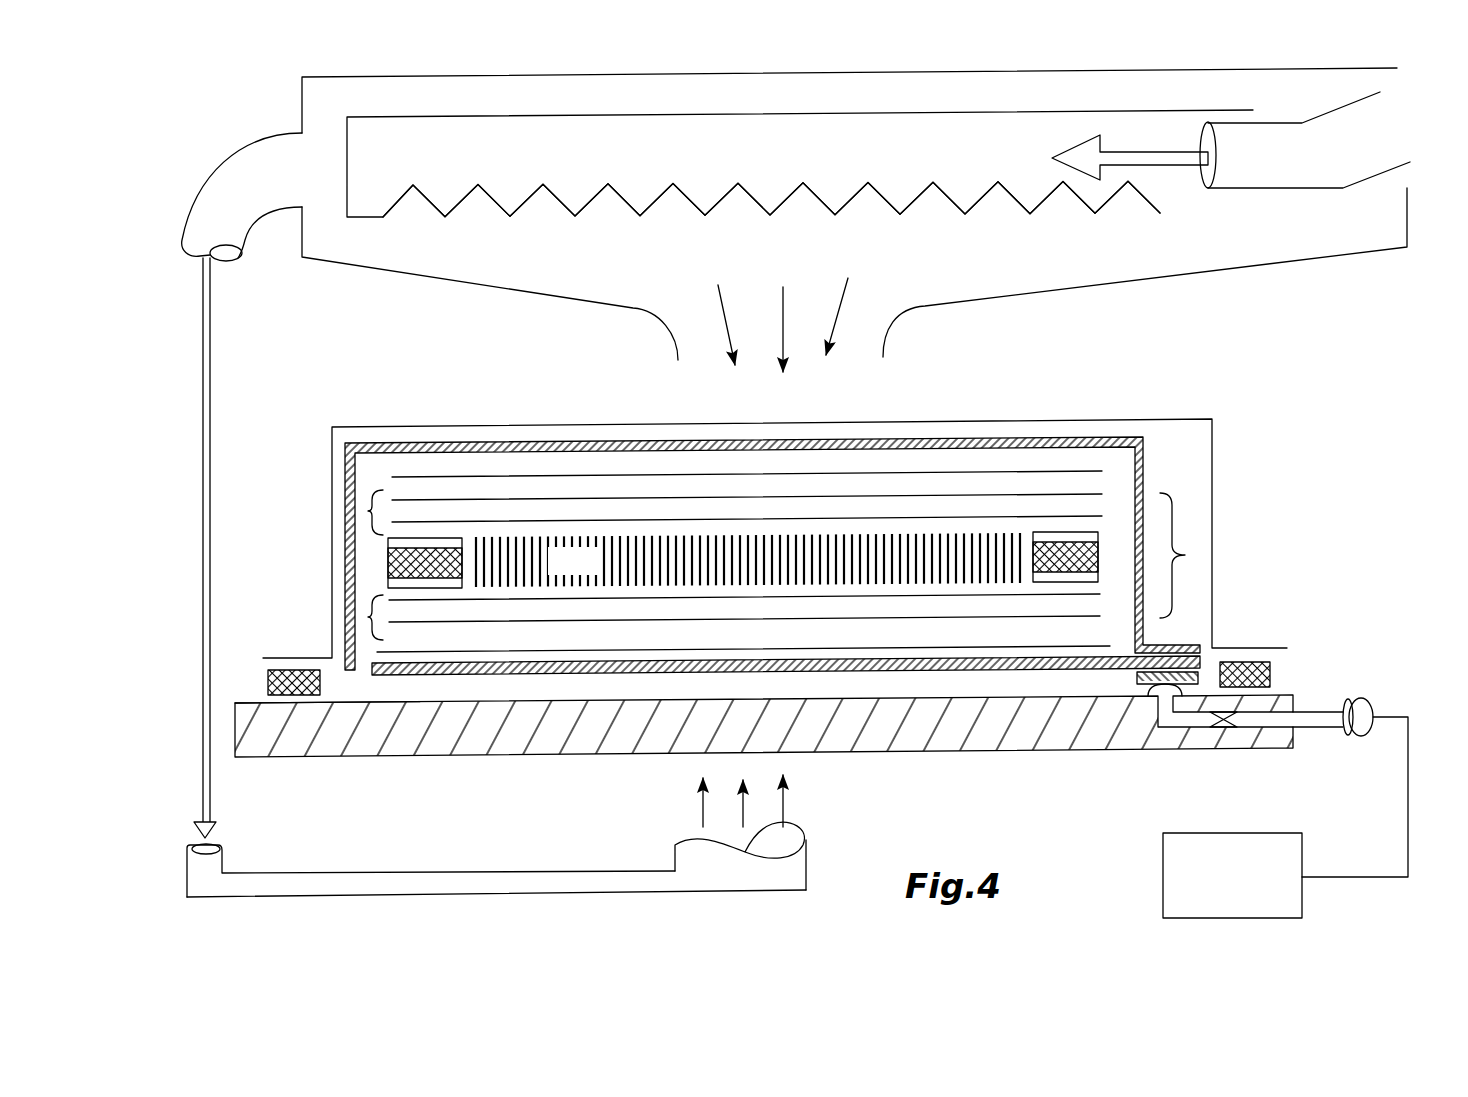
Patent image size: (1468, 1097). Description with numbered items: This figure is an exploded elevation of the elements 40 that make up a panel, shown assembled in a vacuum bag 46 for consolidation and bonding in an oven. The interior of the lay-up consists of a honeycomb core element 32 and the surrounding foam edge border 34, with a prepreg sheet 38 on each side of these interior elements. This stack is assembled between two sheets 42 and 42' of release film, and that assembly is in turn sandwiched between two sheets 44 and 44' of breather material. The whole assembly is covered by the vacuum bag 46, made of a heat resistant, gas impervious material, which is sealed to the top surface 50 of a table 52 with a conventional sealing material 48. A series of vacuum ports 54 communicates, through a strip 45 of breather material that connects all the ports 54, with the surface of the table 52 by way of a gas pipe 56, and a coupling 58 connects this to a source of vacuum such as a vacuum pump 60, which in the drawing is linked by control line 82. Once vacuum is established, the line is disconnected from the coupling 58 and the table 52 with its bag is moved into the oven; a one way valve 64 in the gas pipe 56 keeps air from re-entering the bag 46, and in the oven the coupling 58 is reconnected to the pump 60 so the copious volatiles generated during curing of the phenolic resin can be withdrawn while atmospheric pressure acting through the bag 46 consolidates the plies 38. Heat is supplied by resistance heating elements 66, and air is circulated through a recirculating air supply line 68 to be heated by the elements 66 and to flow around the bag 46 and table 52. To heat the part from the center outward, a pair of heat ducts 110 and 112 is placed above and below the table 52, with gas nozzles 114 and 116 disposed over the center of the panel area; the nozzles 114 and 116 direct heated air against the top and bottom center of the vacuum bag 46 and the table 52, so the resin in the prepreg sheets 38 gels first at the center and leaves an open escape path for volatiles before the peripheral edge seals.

The honeycomb core element 32 is at (748, 560).
The foam edge border 34 is at (378, 555).
The prepreg sheets 38 is at (355, 505).
The elements 40 is at (1205, 551).
The sheet of release film 42 is at (747, 409).
The sheet of release film 42' is at (743, 742).
The sheet of breather material 44 is at (810, 505).
The sheet of breather material 44' is at (786, 747).
The strip of breather material 45 is at (1127, 698).
The vacuum bag 46 is at (457, 418).
The sealing material 48 is at (258, 659).
The top surface 50 is at (246, 694).
The table 52 is at (764, 726).
The vacuum ports 54 is at (1197, 682).
The gas pipe 56 is at (1323, 690).
The coupling 58 is at (1388, 692).
The vacuum pump 60 is at (1232, 875).
The one way valve 64 is at (1219, 757).
The resistance heating elements 66 is at (640, 188).
The recirculating air supply line 68 is at (1231, 140).
The control line 82 is at (1405, 810).
The heat duct 110 is at (262, 228).
The heat duct 112 is at (440, 868).
The gas nozzle 114 is at (628, 312).
The gas nozzle 116 is at (740, 833).